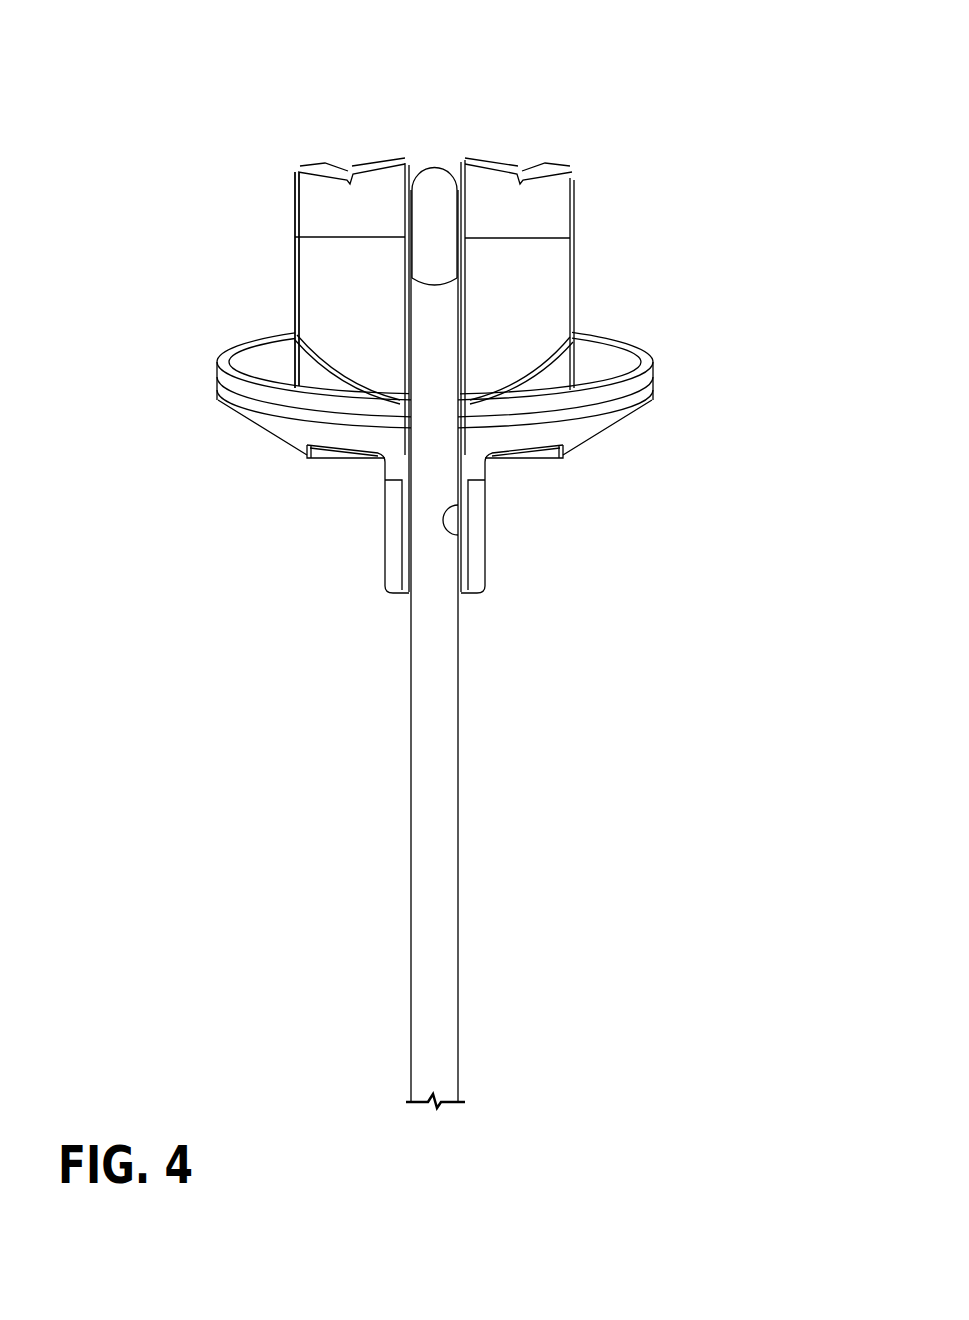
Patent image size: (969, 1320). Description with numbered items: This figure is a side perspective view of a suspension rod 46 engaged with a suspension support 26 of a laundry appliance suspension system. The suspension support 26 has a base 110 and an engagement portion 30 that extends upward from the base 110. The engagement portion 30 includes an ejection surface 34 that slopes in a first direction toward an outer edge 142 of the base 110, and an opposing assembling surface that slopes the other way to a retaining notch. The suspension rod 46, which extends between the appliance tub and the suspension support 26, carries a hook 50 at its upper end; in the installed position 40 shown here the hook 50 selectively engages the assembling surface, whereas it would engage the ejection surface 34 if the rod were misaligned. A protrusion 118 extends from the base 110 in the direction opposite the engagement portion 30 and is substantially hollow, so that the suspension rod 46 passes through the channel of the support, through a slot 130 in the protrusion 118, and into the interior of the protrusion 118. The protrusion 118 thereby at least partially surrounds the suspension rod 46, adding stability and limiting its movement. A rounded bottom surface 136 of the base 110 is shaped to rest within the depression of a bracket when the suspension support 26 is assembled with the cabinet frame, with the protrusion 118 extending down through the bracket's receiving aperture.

The suspension support 26 is at (575, 222).
The engagement portion 30 is at (293, 288).
The ejection surface 34 is at (337, 270).
The installed position 40 is at (374, 321).
The suspension rod 46 is at (433, 747).
The hook 50 is at (430, 182).
The base 110 is at (597, 370).
The protrusion 118 is at (385, 540).
The slot 130 is at (465, 540).
The rounded bottom surface 136 is at (278, 447).
The outer edge 142 is at (650, 365).